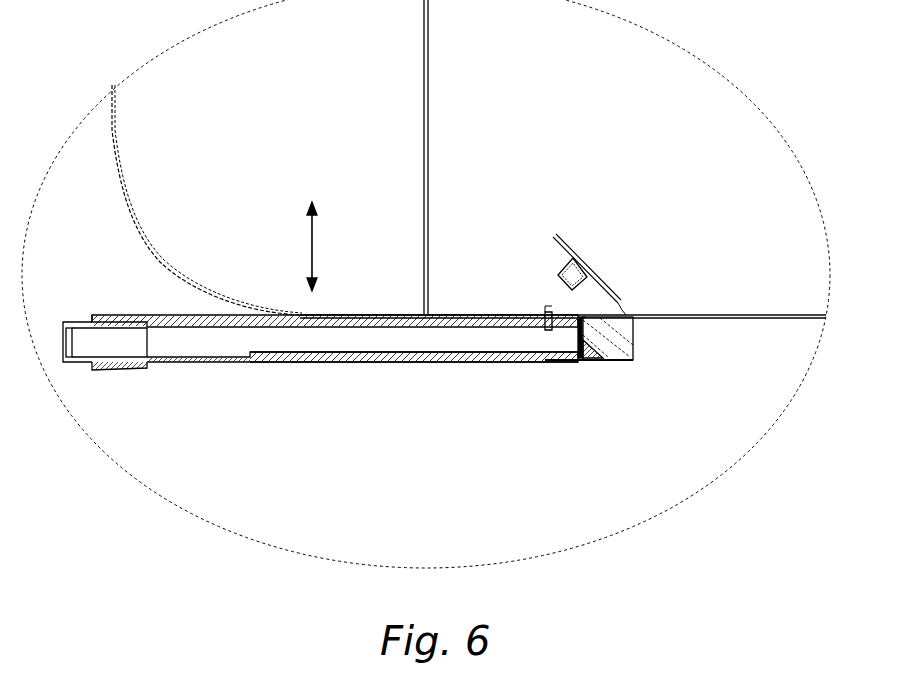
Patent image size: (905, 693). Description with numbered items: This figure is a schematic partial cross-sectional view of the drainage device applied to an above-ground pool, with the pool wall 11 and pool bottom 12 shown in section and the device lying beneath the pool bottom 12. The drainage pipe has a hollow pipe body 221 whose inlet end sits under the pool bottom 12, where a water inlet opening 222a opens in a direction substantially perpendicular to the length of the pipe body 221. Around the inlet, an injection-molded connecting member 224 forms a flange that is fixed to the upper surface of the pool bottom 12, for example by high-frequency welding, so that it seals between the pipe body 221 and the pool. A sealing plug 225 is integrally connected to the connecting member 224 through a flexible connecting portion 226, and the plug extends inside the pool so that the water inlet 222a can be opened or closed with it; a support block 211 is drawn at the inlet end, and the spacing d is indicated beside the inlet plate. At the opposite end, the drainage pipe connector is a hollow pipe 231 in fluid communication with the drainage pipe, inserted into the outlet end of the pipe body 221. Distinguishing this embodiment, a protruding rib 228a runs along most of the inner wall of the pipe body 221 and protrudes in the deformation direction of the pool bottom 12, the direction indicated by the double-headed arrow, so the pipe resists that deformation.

The curved wall 11 is at (178, 121).
The pool bottom 12 is at (718, 316).
The pipe body 221 is at (208, 320).
The water inlet opening 222a is at (578, 319).
The connecting member 224 is at (547, 314).
The sealing plug 225 is at (562, 273).
The flexible connecting portion 226 is at (622, 305).
The protruding rib 228a is at (343, 357).
The hollow pipe 231 is at (92, 354).
The support block 211 is at (624, 337).
The distance d is at (585, 318).